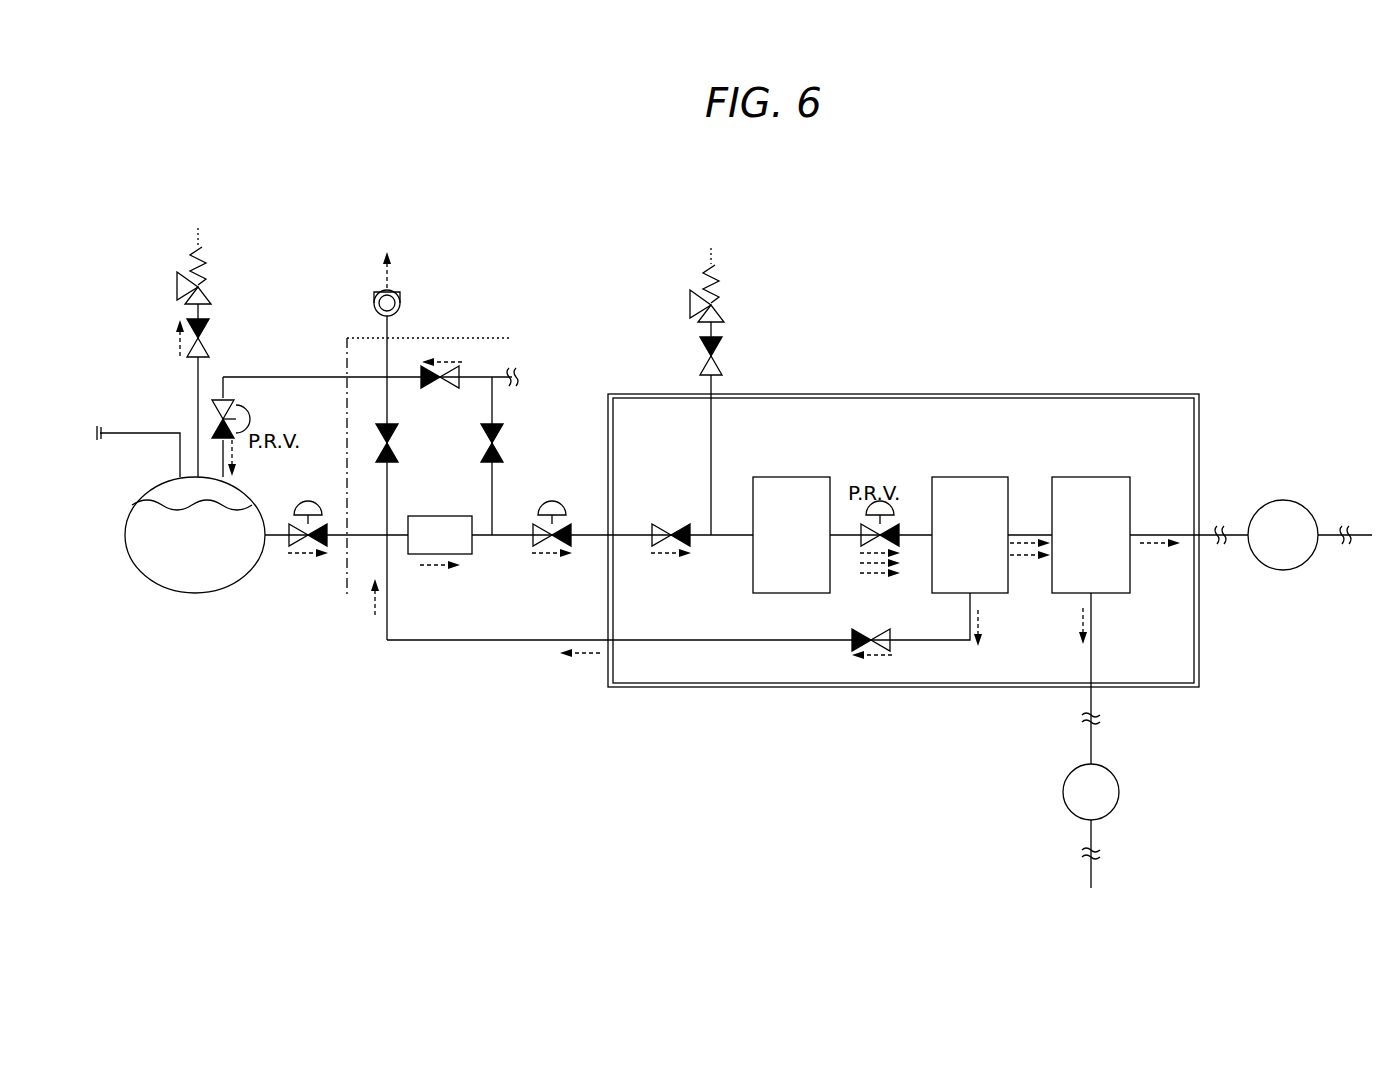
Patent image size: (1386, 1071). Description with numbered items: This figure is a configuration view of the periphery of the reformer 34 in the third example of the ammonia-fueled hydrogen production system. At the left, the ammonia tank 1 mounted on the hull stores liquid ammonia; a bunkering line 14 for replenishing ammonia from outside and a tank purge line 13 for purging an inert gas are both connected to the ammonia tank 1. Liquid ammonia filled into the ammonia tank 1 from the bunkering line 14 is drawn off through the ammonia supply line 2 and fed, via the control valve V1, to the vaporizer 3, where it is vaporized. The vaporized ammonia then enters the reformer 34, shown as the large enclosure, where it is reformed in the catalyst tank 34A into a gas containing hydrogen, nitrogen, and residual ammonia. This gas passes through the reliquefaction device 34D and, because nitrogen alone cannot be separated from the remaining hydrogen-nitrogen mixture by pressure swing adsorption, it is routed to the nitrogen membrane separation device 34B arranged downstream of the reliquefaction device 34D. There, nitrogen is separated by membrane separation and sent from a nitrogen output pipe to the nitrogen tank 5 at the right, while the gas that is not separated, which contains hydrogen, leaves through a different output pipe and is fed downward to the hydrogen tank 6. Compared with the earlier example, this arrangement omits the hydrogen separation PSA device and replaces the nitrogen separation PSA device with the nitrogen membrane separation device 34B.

The ammonia tank 1 is at (243, 585).
The ammonia supply line 2 is at (276, 550).
The vaporizer 3 is at (436, 515).
The nitrogen tank 5 is at (1282, 500).
The hydrogen tank 6 is at (1119, 786).
The tank purge line 13 is at (280, 377).
The bunkering line 14 is at (148, 433).
The reformer 34 is at (1199, 650).
The catalyst tank 34A is at (788, 477).
The nitrogen membrane separation device 34B is at (1088, 477).
The reliquefaction device 34D is at (968, 477).
The control valve V1 is at (318, 521).